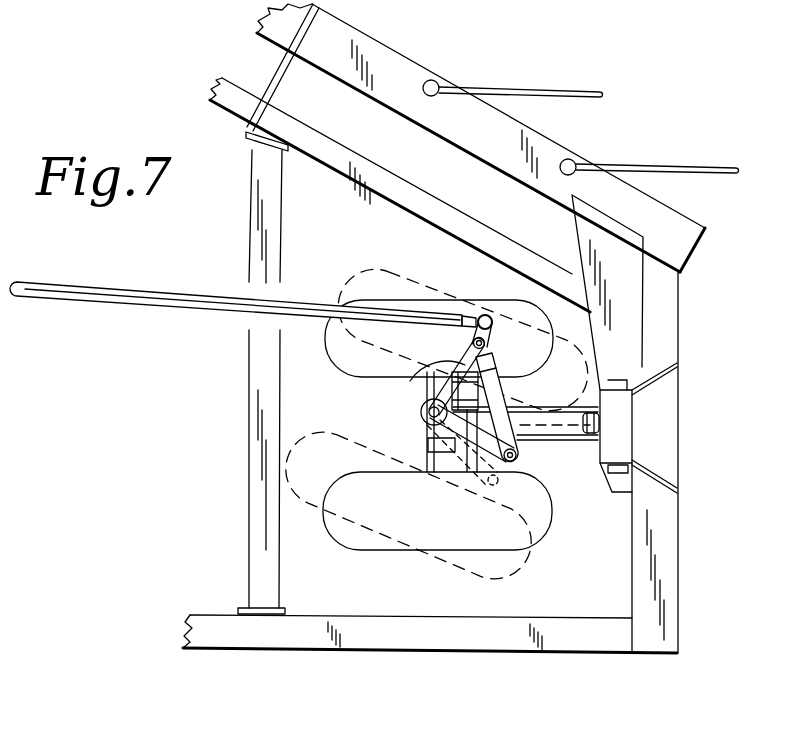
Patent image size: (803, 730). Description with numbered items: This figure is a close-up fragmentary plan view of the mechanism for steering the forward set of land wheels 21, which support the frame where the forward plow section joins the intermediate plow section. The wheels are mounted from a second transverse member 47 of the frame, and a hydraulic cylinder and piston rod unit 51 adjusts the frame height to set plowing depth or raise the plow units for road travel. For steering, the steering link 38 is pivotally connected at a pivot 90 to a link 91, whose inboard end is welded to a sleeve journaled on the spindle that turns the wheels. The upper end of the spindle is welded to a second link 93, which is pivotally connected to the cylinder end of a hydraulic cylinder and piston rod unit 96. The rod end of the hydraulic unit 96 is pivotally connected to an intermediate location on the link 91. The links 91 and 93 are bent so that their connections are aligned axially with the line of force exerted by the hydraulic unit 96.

The forward set of land wheels 21 is at (386, 553).
The steering link 38 is at (164, 305).
The second transverse member 47 is at (663, 510).
The hydraulic cylinder and piston rod unit 51 is at (572, 438).
The pivotal connection 90 is at (486, 315).
The link 91 is at (418, 367).
The second link 93 is at (420, 412).
The hydraulic cylinder and piston rod unit 96 is at (504, 382).